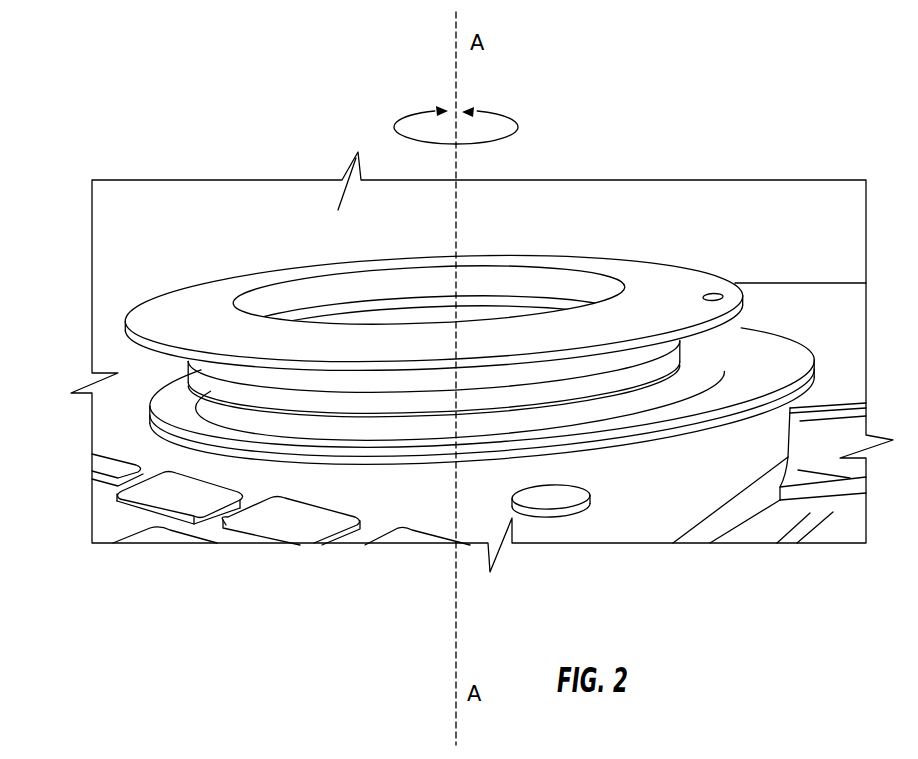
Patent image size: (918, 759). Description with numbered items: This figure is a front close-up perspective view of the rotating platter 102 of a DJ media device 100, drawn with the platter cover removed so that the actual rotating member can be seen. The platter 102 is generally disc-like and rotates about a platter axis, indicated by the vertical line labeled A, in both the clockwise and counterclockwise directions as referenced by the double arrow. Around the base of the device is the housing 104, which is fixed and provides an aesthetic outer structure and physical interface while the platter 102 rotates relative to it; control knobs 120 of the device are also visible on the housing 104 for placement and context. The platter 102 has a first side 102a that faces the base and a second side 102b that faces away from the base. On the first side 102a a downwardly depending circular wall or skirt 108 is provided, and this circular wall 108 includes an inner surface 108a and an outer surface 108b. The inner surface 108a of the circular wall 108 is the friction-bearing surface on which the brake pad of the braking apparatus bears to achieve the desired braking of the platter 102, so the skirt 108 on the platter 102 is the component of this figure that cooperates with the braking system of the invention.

The DJ media device 100 is at (588, 120).
The platter 102 is at (244, 286).
The first side 102a is at (237, 385).
The second side 102b is at (322, 270).
The housing 104 is at (613, 527).
The circular wall 108 is at (198, 392).
The inner surface 108a is at (218, 378).
The outer surface 108b is at (268, 392).
The control knobs 120 is at (320, 523).